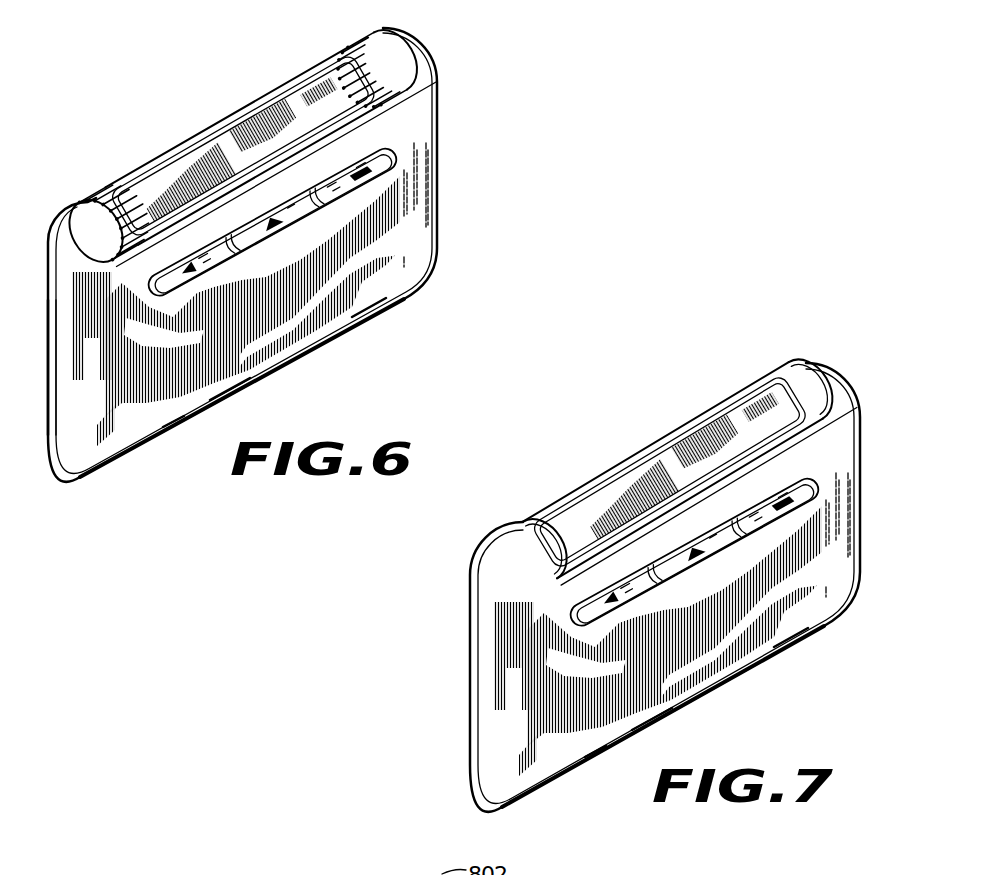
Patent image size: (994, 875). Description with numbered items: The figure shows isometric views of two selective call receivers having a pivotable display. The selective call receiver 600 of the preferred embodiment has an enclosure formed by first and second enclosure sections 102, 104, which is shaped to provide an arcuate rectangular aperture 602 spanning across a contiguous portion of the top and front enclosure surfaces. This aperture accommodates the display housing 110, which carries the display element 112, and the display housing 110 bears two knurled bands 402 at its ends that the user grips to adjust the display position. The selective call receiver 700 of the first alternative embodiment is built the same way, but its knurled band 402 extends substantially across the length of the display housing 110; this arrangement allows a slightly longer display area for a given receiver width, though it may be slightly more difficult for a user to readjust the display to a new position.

In FIG. 6, the first enclosure section 102 is at (80, 478).
In FIG. 7, the first enclosure section 102 is at (665, 587).
In FIG. 6, the second enclosure section 104 is at (52, 456).
In FIG. 6, the display housing 110 is at (188, 147).
In FIG. 7, the display housing 110 is at (645, 455).
In FIG. 6, the display element 112 is at (292, 116).
In FIG. 7, the display element 112 is at (765, 407).
In FIG. 6, the knurled band 402 is at (94, 196).
In FIG. 7, the knurled band 402 is at (545, 508).
In FIG. 6, the arcuate rectangular aperture 602 is at (406, 120).
In FIG. 7, the arcuate rectangular aperture 602 is at (553, 585).
In FIG. 6, the selective call receiver 600 is at (259, 278).
In FIG. 7, the selective call receiver 700 is at (624, 561).